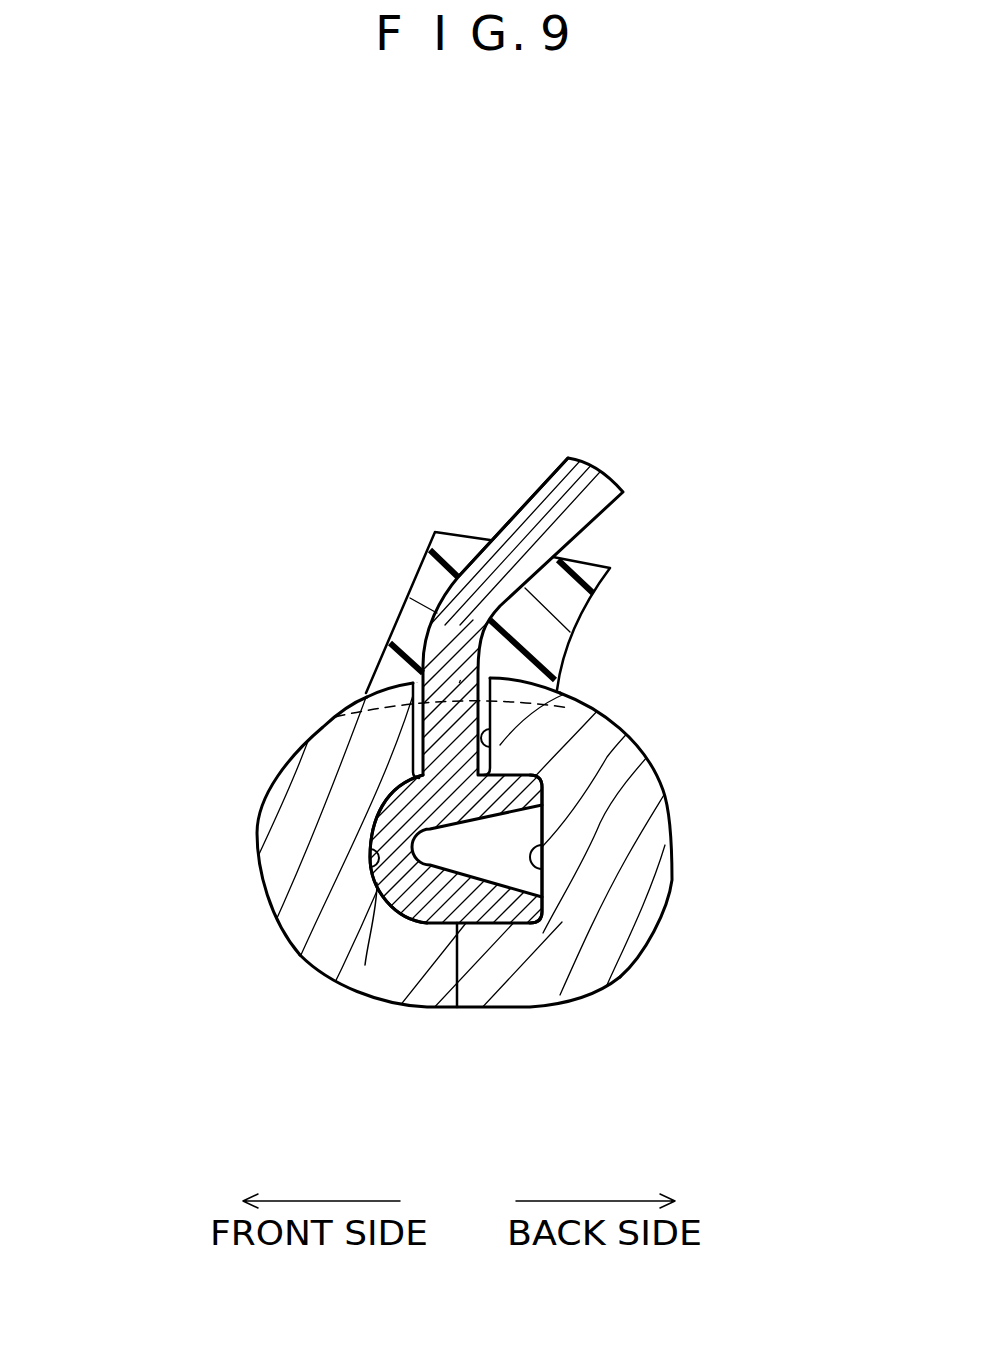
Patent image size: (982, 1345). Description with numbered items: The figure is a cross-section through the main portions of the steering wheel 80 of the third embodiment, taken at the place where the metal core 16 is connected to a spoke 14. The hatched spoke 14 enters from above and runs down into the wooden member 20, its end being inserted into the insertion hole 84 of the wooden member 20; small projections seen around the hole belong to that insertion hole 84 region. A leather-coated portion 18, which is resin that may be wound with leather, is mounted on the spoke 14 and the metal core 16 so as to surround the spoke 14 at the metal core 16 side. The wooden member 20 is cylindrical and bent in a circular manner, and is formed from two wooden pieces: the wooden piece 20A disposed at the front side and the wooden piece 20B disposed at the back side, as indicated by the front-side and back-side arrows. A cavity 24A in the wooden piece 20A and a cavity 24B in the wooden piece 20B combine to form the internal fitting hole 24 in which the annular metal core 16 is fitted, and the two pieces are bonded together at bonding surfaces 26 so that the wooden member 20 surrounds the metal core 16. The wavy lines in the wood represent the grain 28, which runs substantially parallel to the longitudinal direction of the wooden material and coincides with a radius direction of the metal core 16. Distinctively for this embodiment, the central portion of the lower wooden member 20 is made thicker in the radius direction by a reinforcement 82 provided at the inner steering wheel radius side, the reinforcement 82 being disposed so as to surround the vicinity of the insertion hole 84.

The spoke 14 is at (541, 488).
The metal core 16 is at (365, 965).
The leather-coated portion 18 is at (460, 532).
The wooden member 20 is at (463, 856).
The wooden piece 20A is at (257, 847).
The wooden piece 20B is at (672, 823).
The fitting hole 24 is at (480, 740).
The cavity 24A is at (383, 883).
The cavity 24B is at (542, 873).
The bonding surface 26 is at (460, 978).
The grain 28 is at (323, 783).
The steering wheel 80 is at (473, 305).
The reinforcement 82 is at (367, 697).
The insertion hole 84 is at (505, 748).